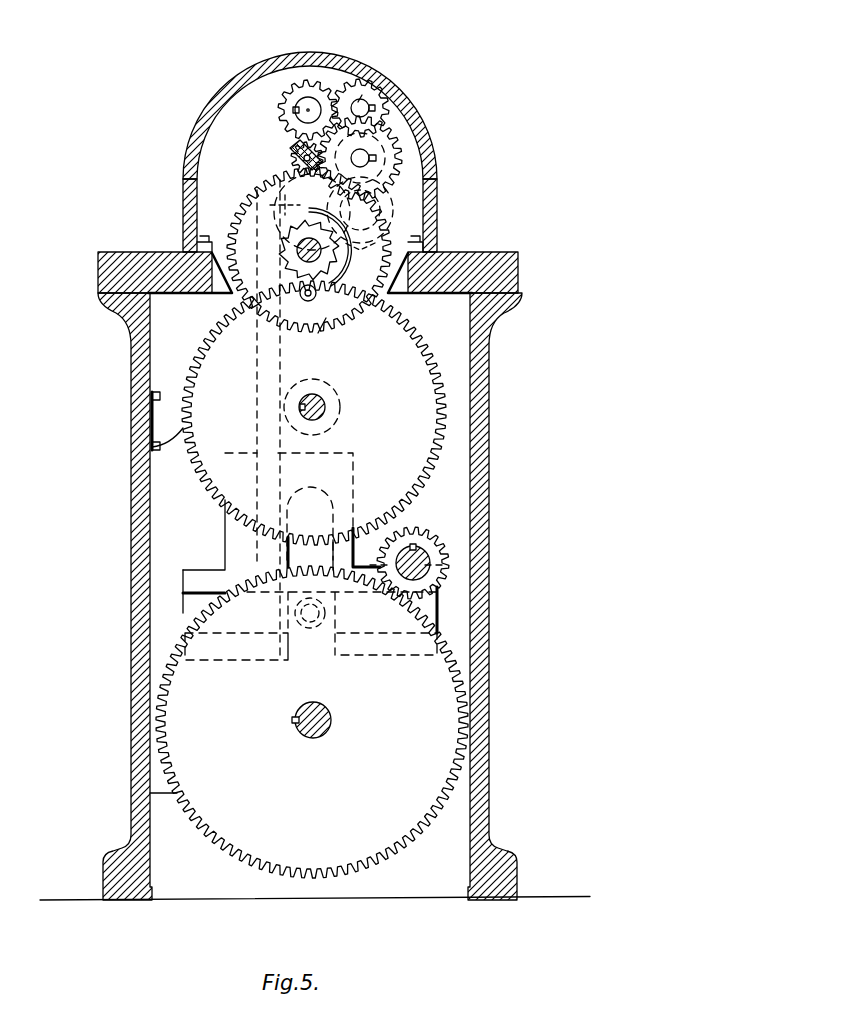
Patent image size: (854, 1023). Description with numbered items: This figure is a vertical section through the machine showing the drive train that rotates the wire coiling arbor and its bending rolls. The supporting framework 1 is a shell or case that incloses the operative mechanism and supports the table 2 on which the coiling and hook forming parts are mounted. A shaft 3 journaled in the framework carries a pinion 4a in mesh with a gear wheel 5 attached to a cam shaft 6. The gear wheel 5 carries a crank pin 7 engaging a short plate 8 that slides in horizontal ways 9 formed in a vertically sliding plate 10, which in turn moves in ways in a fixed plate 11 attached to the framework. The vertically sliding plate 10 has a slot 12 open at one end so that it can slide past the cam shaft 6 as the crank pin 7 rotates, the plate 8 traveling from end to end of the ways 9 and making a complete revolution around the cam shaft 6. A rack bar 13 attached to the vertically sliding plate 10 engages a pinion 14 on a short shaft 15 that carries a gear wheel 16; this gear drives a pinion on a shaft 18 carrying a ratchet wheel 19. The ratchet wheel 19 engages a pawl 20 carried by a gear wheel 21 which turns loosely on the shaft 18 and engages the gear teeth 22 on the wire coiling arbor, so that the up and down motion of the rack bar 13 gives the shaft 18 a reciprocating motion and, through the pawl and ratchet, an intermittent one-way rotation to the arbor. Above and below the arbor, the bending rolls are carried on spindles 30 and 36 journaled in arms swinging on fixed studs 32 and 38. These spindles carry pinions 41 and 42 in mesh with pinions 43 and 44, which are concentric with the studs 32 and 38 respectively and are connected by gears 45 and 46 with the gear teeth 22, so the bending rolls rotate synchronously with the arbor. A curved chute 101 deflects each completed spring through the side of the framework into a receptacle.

The supporting framework 1 is at (132, 452).
The table 2 is at (470, 252).
The shaft 3 is at (420, 558).
The pinion 4a is at (422, 540).
The gear wheel 5 is at (470, 700).
The cam shaft 6 is at (332, 720).
The crank pin 7 is at (310, 628).
The plate 8 is at (262, 636).
The horizontal ways 9 is at (195, 608).
The vertically sliding plate 10 is at (242, 530).
The fixed plate 11 is at (183, 585).
The slot 12 is at (325, 556).
The rack bar 13 is at (278, 389).
The pinion 14 is at (330, 392).
The short shaft 15 is at (322, 414).
The gear wheel 16 is at (420, 343).
The shaft 18 is at (322, 256).
The ratchet wheel 19 is at (337, 275).
The pawl 20 is at (318, 292).
The gear wheel 21 is at (323, 337).
The gear teeth 22 is at (292, 154).
The spindle 30 is at (310, 108).
The fixed stud 32 is at (362, 108).
The spindle 36 is at (240, 206).
The fixed stud 38 is at (380, 216).
The pinion 41 is at (283, 102).
The pinion 42 is at (272, 188).
The pinion 43 is at (362, 95).
The pinion 44 is at (378, 200).
The gear 45 is at (390, 140).
The gear 46 is at (375, 158).
The curved chute 101 is at (163, 400).